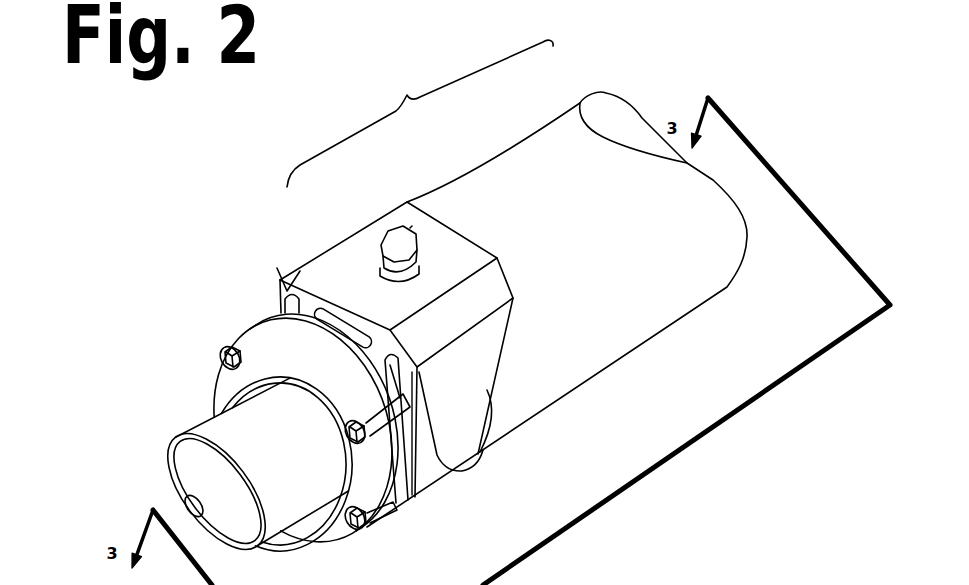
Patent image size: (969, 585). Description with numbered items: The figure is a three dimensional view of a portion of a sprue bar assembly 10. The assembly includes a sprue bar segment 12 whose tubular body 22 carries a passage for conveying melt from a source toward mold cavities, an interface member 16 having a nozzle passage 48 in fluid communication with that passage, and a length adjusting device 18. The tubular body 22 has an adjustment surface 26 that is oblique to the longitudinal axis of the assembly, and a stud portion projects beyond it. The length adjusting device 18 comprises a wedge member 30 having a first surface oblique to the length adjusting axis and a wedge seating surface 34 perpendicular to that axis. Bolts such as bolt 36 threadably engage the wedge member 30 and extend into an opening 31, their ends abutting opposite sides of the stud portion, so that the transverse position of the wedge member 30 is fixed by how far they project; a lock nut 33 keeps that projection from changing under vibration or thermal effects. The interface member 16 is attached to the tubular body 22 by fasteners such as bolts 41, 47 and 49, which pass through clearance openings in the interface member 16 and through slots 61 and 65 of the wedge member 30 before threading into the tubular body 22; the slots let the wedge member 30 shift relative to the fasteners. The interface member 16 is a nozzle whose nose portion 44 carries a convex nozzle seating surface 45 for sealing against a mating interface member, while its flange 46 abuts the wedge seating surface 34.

The sprue bar assembly 10 is at (228, 150).
The sprue bar segment 12 is at (407, 95).
The interface member 16 is at (180, 368).
The length adjusting device 18 is at (324, 210).
The tubular body 22 is at (617, 249).
The adjustment surface 26 is at (490, 412).
The wedge member 30 is at (430, 474).
The opening 31 is at (338, 327).
The lock nut 33 is at (424, 235).
The wedge seating surface 34 is at (273, 268).
The bolt 36 is at (403, 240).
The bolt 41 is at (224, 355).
The nose portion 44 is at (280, 513).
The nozzle seating surface 45 is at (183, 507).
The flange 46 is at (252, 340).
The bolt 47 is at (408, 497).
The nozzle passage 48 is at (193, 513).
The bolt 49 is at (360, 527).
The slot 61 is at (288, 305).
The slot 65 is at (430, 472).